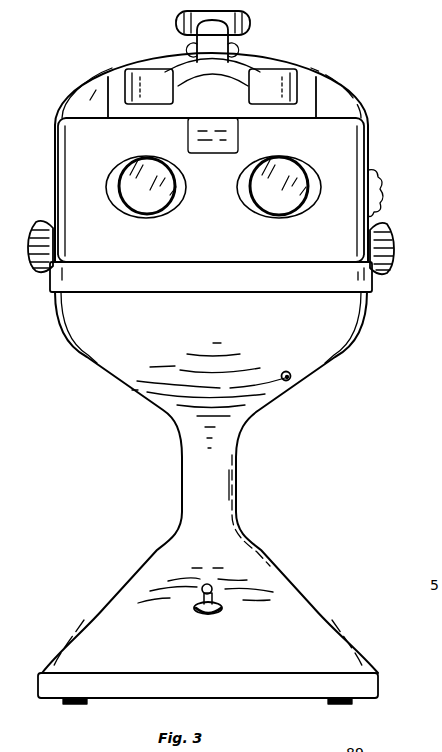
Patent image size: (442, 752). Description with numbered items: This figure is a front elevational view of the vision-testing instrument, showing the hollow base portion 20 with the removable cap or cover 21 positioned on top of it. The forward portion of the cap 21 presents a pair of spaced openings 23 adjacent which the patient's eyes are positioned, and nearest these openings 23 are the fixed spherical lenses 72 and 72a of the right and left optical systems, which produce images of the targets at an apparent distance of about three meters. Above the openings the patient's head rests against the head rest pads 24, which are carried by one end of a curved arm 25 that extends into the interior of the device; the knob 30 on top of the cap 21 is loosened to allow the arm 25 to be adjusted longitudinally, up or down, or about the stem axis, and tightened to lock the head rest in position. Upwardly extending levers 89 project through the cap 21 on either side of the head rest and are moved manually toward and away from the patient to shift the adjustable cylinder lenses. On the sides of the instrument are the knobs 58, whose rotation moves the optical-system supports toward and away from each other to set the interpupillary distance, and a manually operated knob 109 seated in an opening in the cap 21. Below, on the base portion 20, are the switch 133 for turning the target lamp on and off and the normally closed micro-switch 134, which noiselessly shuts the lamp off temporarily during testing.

The hollow base portion 20 is at (252, 578).
The removable cap 21 is at (355, 96).
The spaced openings 23 is at (176, 209).
The head rest pads 24 is at (261, 95).
The curved arm 25 is at (231, 39).
The knob 30 is at (250, 22).
The knobs 58 is at (35, 224).
The spherical lens 72 is at (278, 213).
The spherical lens 72a is at (147, 212).
The vertically extending lever 89 is at (102, 75).
The manually operated knob 109 is at (379, 185).
The switch 133 is at (230, 618).
The micro-switch 134 is at (302, 381).